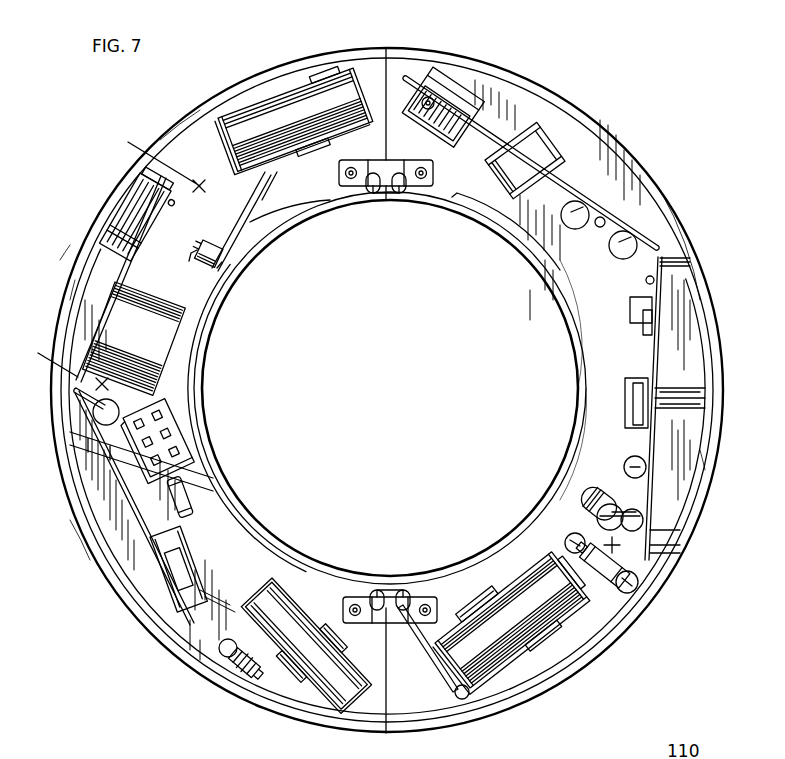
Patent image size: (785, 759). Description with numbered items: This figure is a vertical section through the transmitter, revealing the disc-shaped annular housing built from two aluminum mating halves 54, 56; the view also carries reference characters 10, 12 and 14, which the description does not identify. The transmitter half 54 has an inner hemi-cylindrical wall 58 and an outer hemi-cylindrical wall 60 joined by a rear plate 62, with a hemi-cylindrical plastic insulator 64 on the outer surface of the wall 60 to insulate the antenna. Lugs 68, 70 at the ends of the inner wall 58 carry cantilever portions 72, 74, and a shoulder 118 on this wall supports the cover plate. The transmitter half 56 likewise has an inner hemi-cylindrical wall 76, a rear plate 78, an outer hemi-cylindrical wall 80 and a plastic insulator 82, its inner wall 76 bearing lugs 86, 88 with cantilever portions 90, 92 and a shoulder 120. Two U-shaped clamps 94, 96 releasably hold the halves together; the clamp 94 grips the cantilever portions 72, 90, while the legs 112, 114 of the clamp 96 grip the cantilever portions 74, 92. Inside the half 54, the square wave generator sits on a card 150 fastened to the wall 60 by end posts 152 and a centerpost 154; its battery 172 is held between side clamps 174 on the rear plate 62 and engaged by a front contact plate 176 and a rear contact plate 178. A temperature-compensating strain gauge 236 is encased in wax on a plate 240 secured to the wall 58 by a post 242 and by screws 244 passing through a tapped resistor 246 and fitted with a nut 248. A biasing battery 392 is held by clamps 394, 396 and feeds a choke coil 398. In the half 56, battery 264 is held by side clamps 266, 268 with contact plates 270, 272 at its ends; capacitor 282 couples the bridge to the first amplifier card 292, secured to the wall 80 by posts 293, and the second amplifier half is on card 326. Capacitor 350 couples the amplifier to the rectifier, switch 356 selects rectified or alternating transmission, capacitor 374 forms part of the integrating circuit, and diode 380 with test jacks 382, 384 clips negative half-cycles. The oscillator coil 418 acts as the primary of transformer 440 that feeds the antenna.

The lighting apparatus 10 is at (68, 402).
The housing section 12 is at (109, 258).
The outer wall 14 is at (435, 53).
The transmitter half 54 is at (65, 250).
The transmitter half 56 is at (668, 183).
The inner hemi-cylindrical wall 58 is at (204, 360).
The outer hemi-cylindrical wall 60 is at (72, 309).
The rear plate 62 is at (272, 222).
The hemi-cylindrical plastic insulator 64 is at (178, 128).
The lug 68 is at (372, 188).
The lug 70 is at (380, 590).
The cantilever portion 72 is at (397, 188).
The cantilever portion 74 is at (399, 602).
The inner hemi-cylindrical wall 76 is at (574, 368).
The rear plate 78 is at (595, 401).
The outer hemi-cylindrical wall 80 is at (706, 468).
The hemi-cylindrical plastic insulator 82 is at (590, 664).
The lug 86 is at (389, 196).
The lug 88 is at (394, 598).
The cantilever portion 90 is at (397, 162).
The cantilever portion 92 is at (397, 630).
The clamp 94 is at (438, 172).
The clamp 96 is at (455, 607).
The clamp leg 112 is at (360, 614).
The clamp leg 114 is at (426, 598).
The shoulder 118 is at (243, 253).
The shoulder 120 is at (572, 313).
The card 150 is at (123, 277).
The end posts 152 is at (159, 187).
The centerpost 154 is at (121, 209).
The battery 172 is at (277, 104).
The side clamps 174 is at (318, 111).
The front contact plate 176 is at (258, 98).
The rear contact plate 178 is at (380, 93).
The strain gauge 236 is at (239, 221).
The plate 240 is at (247, 203).
The post 242 is at (307, 212).
The screws 244 is at (193, 255).
The tapped resistor 246 is at (213, 245).
The nut 248 is at (187, 268).
The battery 264 is at (524, 617).
The side clamp 266 is at (477, 604).
The side clamp 268 is at (512, 624).
The contact plate 270 is at (452, 678).
The contact plate 272 is at (572, 572).
The capacitor 282 is at (485, 142).
The first amplifier card 292 is at (567, 190).
The posts 293 is at (436, 88).
The card 326 is at (655, 347).
The capacitor 350 is at (641, 510).
The switch 356 is at (182, 435).
The capacitor 374 is at (594, 497).
The diode 380 is at (640, 571).
The test jack 382 is at (640, 582).
The test jack 384 is at (592, 540).
The biasing battery 392 is at (295, 641).
The clamp 394 is at (291, 667).
The clamp 396 is at (334, 638).
The choke coil 398 is at (240, 677).
The oscillator coil 418 is at (187, 513).
The transformer 440 is at (175, 486).